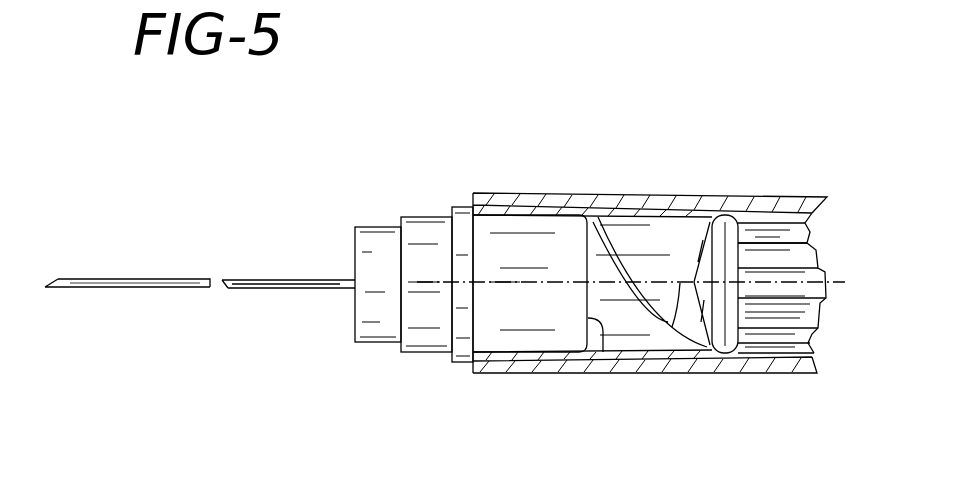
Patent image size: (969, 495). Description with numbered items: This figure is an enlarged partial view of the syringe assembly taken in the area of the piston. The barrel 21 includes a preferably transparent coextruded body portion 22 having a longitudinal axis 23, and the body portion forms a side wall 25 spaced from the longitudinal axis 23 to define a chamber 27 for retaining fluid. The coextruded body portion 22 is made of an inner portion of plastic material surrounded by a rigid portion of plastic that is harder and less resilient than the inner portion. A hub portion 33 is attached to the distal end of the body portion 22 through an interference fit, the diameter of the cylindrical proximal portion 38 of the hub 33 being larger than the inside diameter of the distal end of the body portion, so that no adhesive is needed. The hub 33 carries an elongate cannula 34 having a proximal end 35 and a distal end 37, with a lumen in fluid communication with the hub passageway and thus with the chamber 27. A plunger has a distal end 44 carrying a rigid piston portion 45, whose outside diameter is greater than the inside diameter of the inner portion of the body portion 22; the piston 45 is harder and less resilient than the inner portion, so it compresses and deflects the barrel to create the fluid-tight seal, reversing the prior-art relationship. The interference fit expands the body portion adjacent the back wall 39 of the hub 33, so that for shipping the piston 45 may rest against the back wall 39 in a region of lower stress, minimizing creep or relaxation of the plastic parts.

The barrel 21 is at (517, 190).
The coextruded body portion 22 is at (779, 197).
The longitudinal axis 23 is at (672, 338).
The side wall 25 is at (694, 200).
The chamber 27 is at (656, 245).
The hub portion 33 is at (435, 343).
The elongate cannula 34 is at (198, 289).
The proximal end 35 is at (348, 286).
The distal end 37 is at (58, 289).
The cylindrical proximal portion 38 is at (555, 333).
The back wall 39 is at (603, 352).
The distal end 44 is at (810, 250).
The rigid piston portion 45 is at (731, 348).